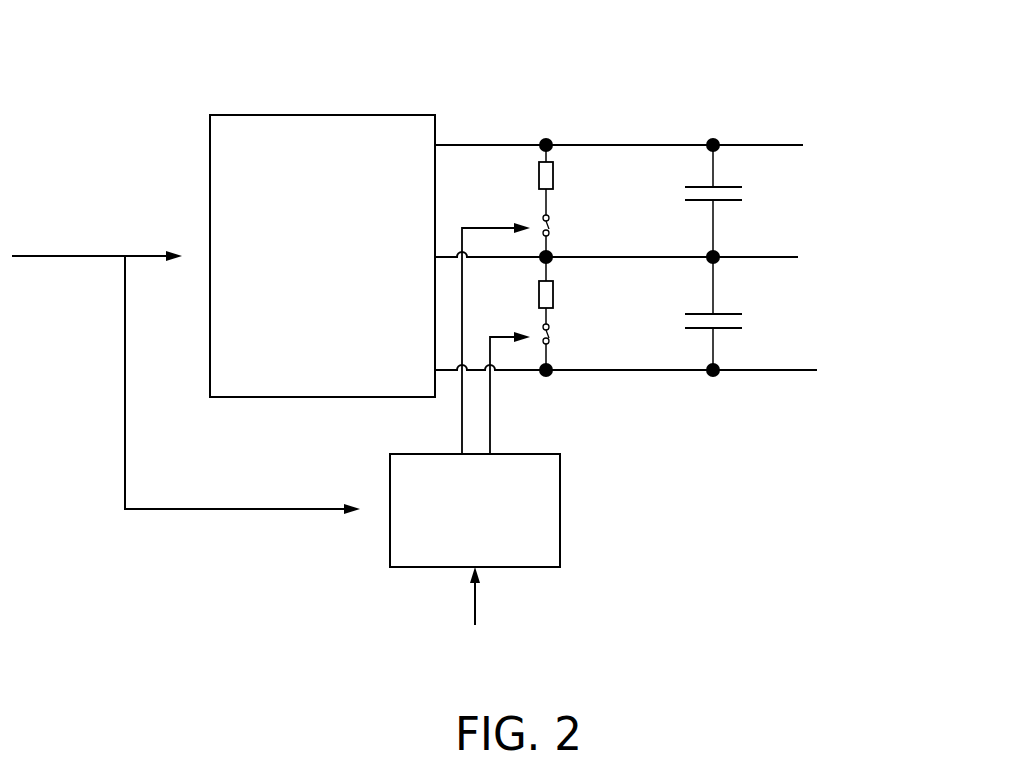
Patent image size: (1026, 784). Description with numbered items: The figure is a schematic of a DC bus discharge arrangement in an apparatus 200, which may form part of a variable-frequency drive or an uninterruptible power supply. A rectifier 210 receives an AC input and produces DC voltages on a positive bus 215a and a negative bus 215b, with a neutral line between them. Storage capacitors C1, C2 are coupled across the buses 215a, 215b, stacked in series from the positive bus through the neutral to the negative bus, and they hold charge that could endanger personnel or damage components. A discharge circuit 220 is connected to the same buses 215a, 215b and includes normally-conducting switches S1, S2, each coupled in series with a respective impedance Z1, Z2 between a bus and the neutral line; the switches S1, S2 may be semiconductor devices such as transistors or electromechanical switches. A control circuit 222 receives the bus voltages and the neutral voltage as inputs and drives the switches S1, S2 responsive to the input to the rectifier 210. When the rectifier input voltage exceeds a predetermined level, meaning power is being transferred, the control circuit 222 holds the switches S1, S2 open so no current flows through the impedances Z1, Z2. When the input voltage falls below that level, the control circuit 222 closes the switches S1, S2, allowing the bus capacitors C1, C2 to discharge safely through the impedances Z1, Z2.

The apparatus 200 is at (172, 45).
The rectifier 210 is at (322, 256).
The bus 215a is at (587, 145).
The bus 215b is at (589, 370).
The discharge circuit 220 is at (678, 501).
The control circuit 222 is at (475, 447).
The impedance Z1 is at (572, 180).
The impedance Z2 is at (572, 290).
The switch S1 is at (574, 235).
The switch S2 is at (574, 347).
The storage capacitor C1 is at (735, 201).
The storage capacitor C2 is at (735, 313).